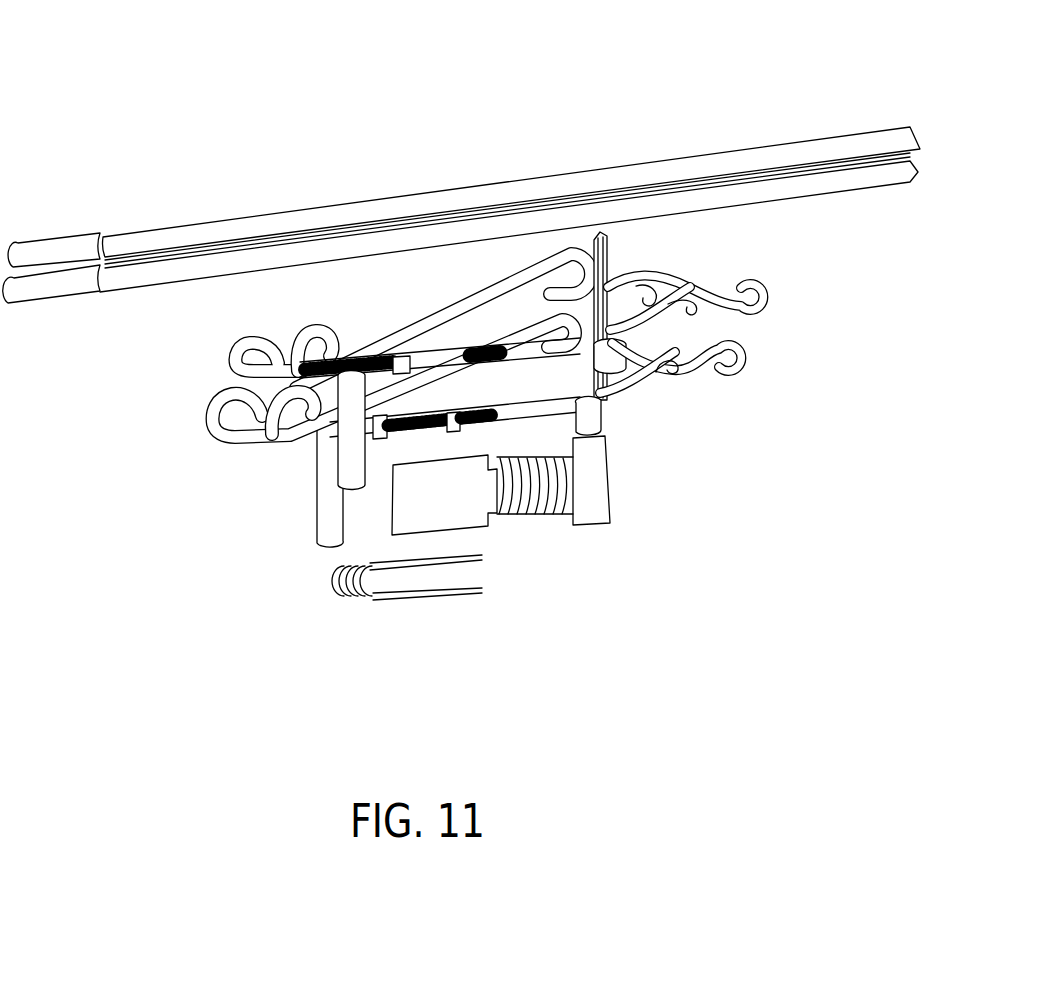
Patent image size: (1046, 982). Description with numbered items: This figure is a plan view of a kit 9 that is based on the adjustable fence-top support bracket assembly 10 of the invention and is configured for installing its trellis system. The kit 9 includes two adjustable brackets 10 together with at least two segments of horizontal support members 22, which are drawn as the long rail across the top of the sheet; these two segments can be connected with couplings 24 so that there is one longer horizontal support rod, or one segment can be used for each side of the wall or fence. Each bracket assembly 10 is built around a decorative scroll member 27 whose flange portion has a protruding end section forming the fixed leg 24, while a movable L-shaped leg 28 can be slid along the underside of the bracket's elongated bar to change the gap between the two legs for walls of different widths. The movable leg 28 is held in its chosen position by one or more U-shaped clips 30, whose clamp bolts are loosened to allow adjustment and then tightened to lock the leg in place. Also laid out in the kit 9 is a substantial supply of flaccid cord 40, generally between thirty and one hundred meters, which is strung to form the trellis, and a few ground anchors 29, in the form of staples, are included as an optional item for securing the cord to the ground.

The kit 9 is at (385, 142).
The horizontal support members 22 is at (258, 258).
The fence-top support bracket assembly 10 is at (193, 386).
The movable L-shaped leg 28 is at (282, 444).
The U-shaped clips 30 is at (452, 408).
The fixed leg 24 is at (596, 396).
The scroll member 27 is at (688, 283).
The flaccid cord 40 is at (519, 527).
The ground anchors 29 is at (373, 598).